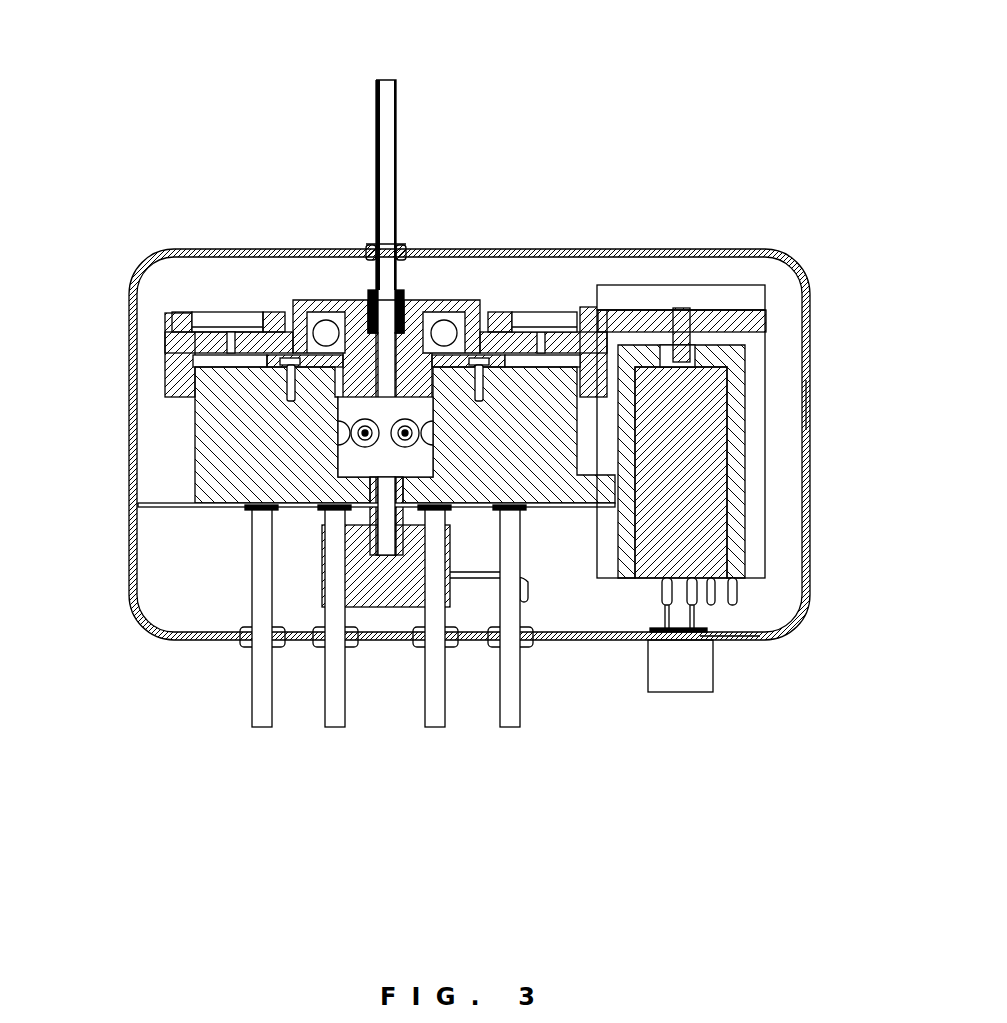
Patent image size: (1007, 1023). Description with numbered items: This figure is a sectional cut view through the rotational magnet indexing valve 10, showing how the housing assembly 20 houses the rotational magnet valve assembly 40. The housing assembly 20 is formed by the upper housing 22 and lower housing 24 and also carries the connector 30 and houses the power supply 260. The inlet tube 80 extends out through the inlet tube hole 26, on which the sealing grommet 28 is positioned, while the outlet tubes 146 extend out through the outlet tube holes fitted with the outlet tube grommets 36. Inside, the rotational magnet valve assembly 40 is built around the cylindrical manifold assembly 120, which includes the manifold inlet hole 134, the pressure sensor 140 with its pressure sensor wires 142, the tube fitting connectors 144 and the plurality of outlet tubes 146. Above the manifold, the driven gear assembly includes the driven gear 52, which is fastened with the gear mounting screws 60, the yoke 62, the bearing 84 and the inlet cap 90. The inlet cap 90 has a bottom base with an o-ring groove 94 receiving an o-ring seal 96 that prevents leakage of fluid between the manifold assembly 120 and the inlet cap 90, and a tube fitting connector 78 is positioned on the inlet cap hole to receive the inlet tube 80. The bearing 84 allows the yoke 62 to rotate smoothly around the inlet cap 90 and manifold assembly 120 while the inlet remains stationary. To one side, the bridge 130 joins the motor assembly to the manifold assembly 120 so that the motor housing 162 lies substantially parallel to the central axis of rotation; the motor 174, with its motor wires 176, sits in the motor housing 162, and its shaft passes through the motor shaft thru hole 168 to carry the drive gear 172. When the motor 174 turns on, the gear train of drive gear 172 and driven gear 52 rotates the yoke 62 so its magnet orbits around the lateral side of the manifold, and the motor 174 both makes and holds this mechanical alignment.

The rotational magnet indexing valve 10 is at (117, 69).
The housing assembly 20 is at (718, 231).
The upper housing 22 is at (808, 408).
The lower housing 24 is at (807, 547).
The inlet tube hole 26 is at (398, 245).
The sealing grommet 28 is at (366, 245).
The connector 30 is at (692, 675).
The outlet tube grommets 36 is at (240, 643).
The rotational magnet valve assembly 40 is at (553, 283).
The driven gear 52 is at (583, 312).
The gear mounting screws 60 is at (492, 312).
The yoke 62 is at (165, 355).
The tube fitting connector 78 is at (405, 292).
The inlet tube 80 is at (376, 130).
The bearing 84 is at (307, 297).
The inlet cap 90 is at (230, 318).
The o-ring groove 94 is at (333, 410).
The o-ring seal 96 is at (340, 383).
The manifold assembly 120 is at (195, 470).
The bridge 130 is at (608, 507).
The manifold inlet hole 134 is at (342, 475).
The pressure sensor 140 is at (400, 590).
The pressure sensor wires 142 is at (530, 600).
The tube fitting connectors 144 is at (248, 507).
The outlet tubes 146 is at (252, 702).
The motor housing 162 is at (745, 468).
The motor shaft thru hole 168 is at (700, 348).
The drive gear 172 is at (760, 330).
The motor 174 is at (723, 540).
The motor wires 176 is at (738, 597).
The power supply 260 is at (737, 295).